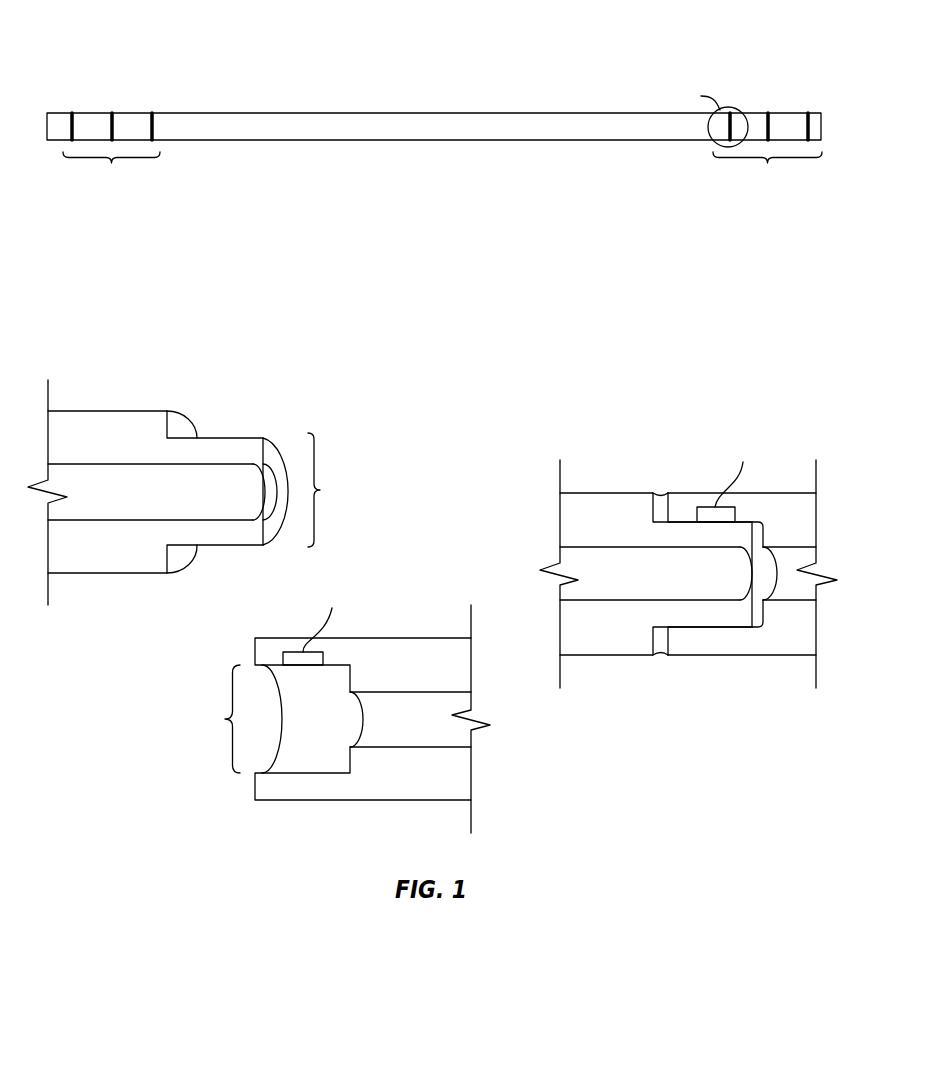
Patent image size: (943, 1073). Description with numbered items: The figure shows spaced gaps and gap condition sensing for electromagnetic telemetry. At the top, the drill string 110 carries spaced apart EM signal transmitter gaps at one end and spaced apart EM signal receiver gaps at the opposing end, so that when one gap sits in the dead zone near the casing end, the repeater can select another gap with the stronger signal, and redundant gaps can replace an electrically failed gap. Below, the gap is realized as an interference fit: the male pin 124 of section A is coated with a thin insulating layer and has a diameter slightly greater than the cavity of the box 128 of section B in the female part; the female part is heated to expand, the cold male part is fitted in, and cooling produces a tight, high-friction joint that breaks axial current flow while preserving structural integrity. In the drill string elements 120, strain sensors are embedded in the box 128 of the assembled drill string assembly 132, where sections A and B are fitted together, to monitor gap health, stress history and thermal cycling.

The drill string 110 is at (140, 38).
The drill string elements 120 is at (688, 526).
The pin 124 is at (231, 437).
The box 128 is at (425, 637).
The drill string assembly 132 is at (747, 657).